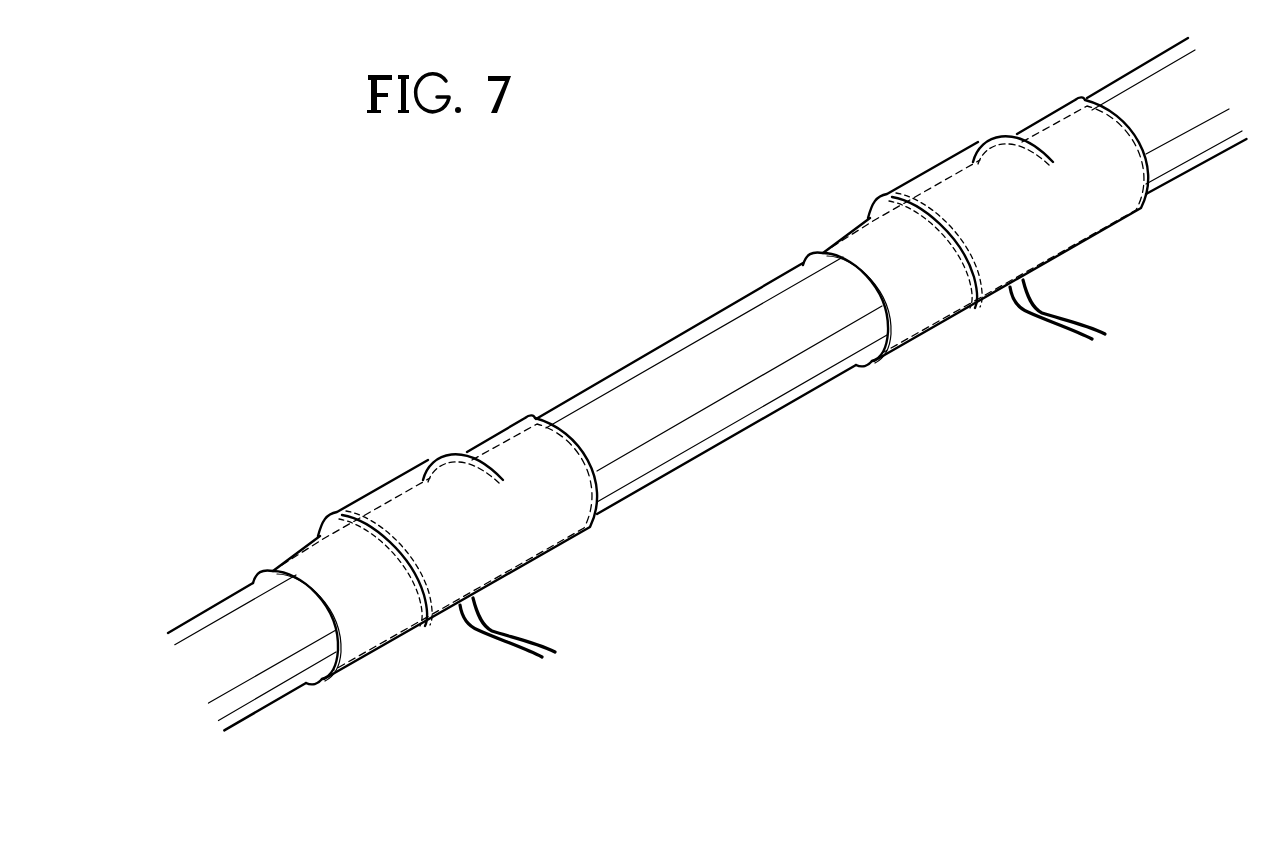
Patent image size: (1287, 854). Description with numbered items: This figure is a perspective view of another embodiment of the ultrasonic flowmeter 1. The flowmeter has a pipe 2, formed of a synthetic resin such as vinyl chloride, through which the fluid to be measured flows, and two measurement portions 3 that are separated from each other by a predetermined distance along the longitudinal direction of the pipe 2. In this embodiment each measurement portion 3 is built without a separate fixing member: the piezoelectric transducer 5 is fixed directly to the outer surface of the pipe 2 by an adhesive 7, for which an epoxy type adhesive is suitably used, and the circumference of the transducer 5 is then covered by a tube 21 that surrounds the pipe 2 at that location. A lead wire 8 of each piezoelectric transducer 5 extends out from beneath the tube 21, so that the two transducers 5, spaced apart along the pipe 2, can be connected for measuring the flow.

The ultrasonic flowmeter 1 is at (707, 394).
The pipe 2 is at (640, 358).
The measurement portion 3 is at (700, 396).
The piezoelectric transducer 5 is at (430, 490).
The adhesive 7 is at (409, 626).
The lead wire 8 is at (551, 654).
The tube 21 is at (357, 665).